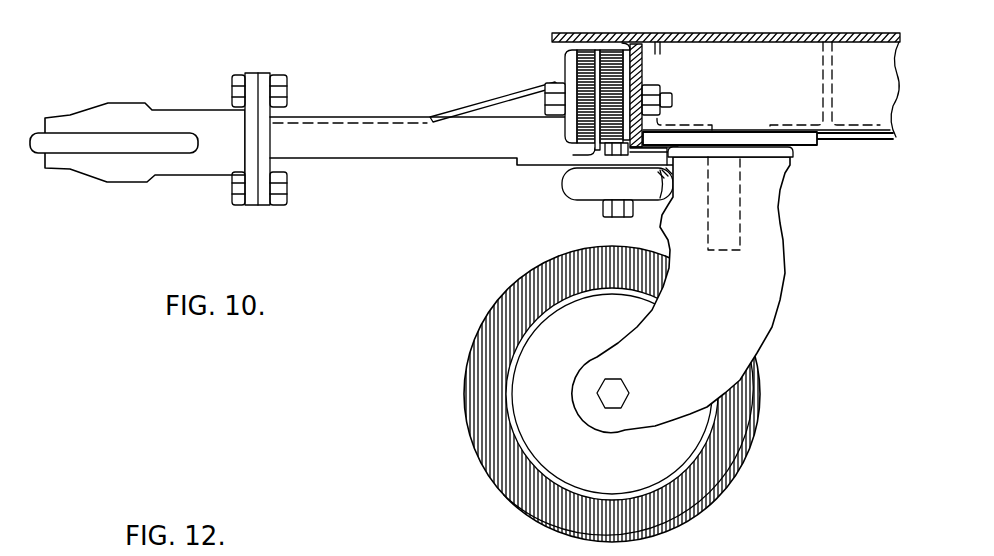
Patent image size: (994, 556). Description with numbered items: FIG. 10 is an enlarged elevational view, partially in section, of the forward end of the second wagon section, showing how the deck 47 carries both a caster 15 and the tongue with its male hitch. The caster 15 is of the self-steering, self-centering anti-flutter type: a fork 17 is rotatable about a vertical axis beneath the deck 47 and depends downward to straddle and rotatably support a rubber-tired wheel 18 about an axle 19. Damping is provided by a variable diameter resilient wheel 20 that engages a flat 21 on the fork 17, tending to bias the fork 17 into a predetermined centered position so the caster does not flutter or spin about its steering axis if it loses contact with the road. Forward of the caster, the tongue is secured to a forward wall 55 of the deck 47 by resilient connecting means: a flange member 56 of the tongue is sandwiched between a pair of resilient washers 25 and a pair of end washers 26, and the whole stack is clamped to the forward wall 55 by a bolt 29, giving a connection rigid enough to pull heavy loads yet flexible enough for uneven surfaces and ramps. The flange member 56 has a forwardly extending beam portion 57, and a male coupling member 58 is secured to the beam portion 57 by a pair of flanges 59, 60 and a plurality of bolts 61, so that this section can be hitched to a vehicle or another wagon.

The caster 15 is at (753, 481).
The fork 17 is at (770, 298).
The rubber-tired wheel 18 is at (741, 429).
The axle 19 is at (612, 393).
The variable diameter resilient wheel 20 is at (558, 182).
The flat 21 is at (653, 224).
The resilient washers 25 is at (608, 50).
The end washers 26 is at (629, 50).
The bolt 29 is at (673, 97).
The deck 47 is at (758, 31).
The forward wall 55 is at (636, 72).
The flange member 56 is at (566, 60).
The beam portion 57 is at (324, 153).
The coupling member 58 is at (180, 113).
The flange 59 is at (263, 73).
The flange 60 is at (250, 206).
The bolts 61 is at (284, 92).